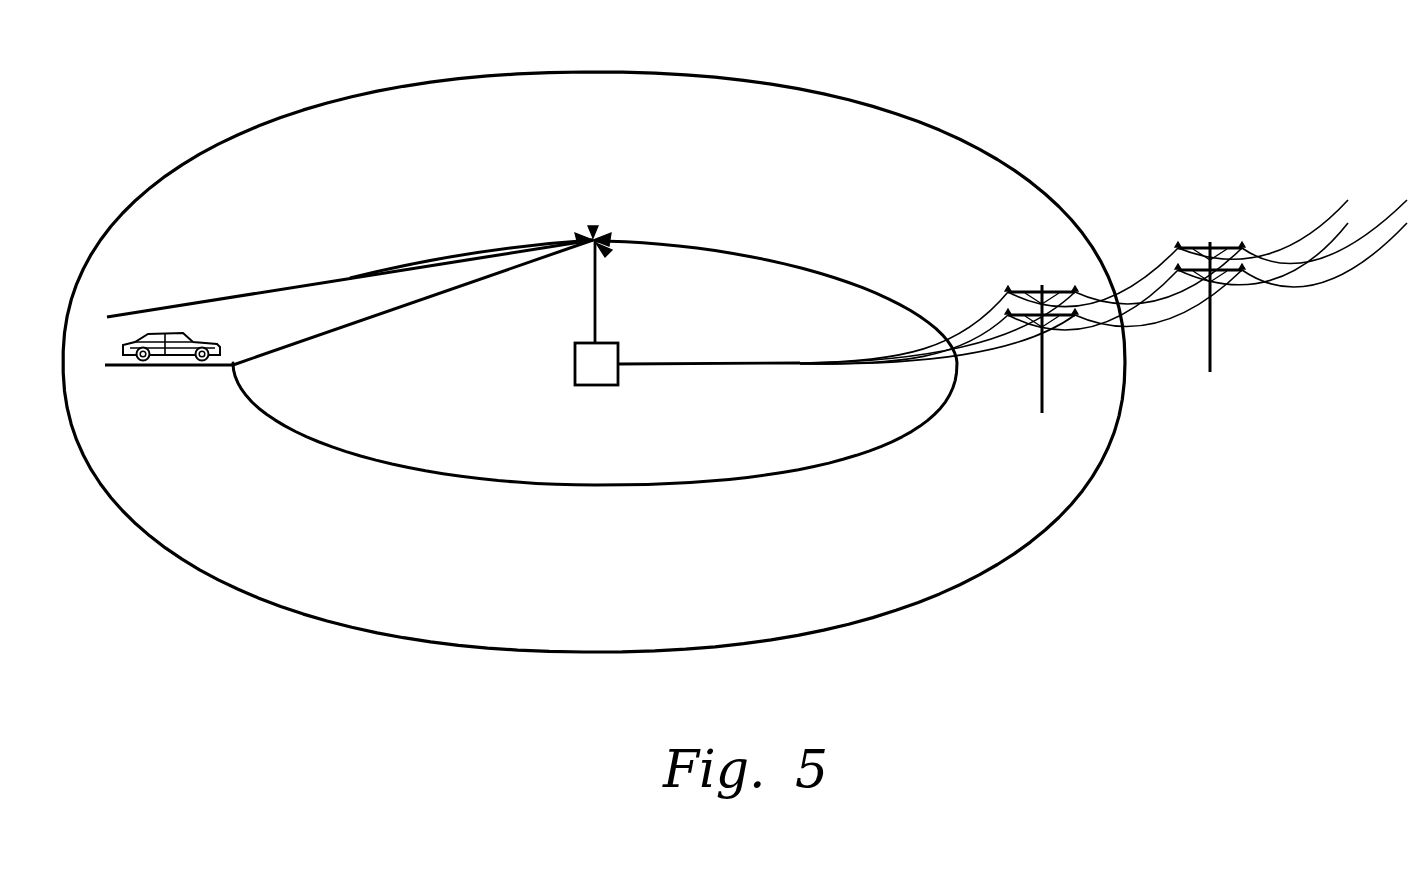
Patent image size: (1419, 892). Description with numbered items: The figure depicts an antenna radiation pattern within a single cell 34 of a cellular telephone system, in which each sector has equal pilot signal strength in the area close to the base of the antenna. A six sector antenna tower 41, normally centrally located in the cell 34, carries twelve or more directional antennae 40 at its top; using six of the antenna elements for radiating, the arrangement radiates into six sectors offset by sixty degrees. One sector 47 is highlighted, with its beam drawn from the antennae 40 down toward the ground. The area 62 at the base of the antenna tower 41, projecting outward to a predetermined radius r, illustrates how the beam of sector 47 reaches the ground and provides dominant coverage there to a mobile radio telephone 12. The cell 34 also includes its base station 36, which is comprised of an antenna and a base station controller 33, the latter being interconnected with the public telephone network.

The mobile radio telephone 12 is at (160, 333).
The sector 47 is at (297, 282).
The directional antennae 40 is at (593, 232).
The antenna tower 41 is at (597, 305).
The base station 36 is at (543, 394).
The base station controller 33 is at (597, 387).
The area 62 is at (830, 305).
The cell 34 is at (1012, 209).